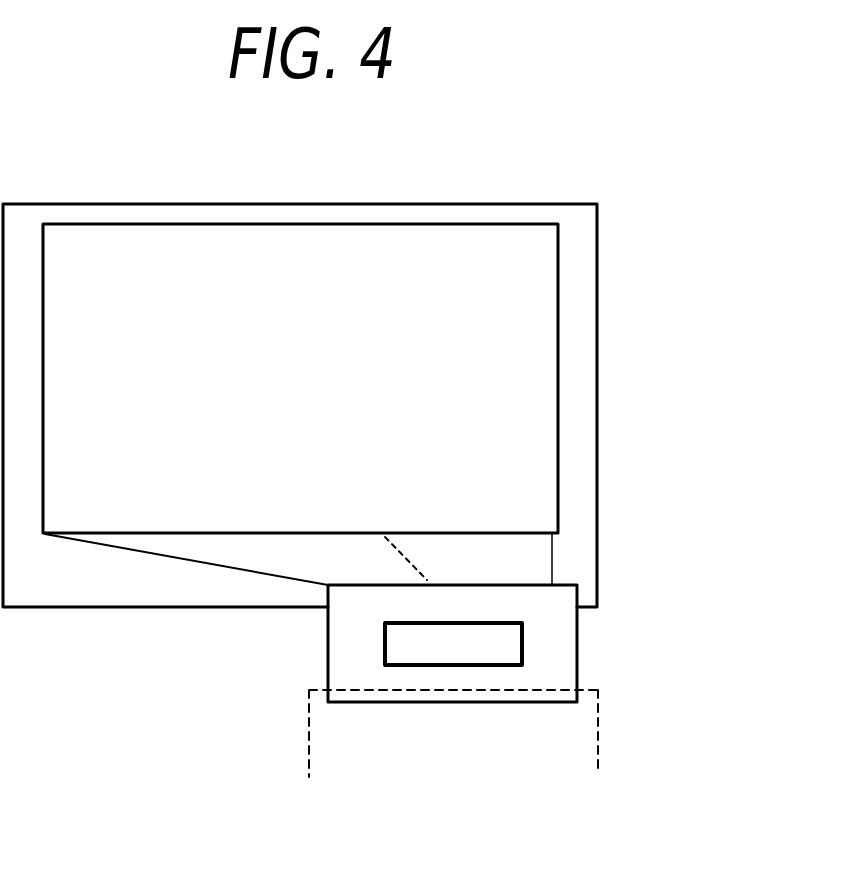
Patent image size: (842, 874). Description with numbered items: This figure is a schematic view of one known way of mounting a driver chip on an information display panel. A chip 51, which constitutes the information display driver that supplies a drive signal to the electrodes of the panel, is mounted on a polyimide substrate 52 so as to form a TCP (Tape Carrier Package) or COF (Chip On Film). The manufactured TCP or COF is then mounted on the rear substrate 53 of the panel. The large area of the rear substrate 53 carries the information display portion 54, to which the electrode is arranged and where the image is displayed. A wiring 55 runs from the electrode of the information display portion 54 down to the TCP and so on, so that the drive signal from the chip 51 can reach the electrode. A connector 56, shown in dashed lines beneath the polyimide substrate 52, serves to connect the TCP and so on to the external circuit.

The chip 51 is at (510, 643).
The polyimide substrate 52 is at (522, 690).
The rear substrate 53 is at (598, 386).
The information display portion 54 is at (517, 282).
The wiring 55 is at (553, 553).
The connector 56 is at (335, 742).